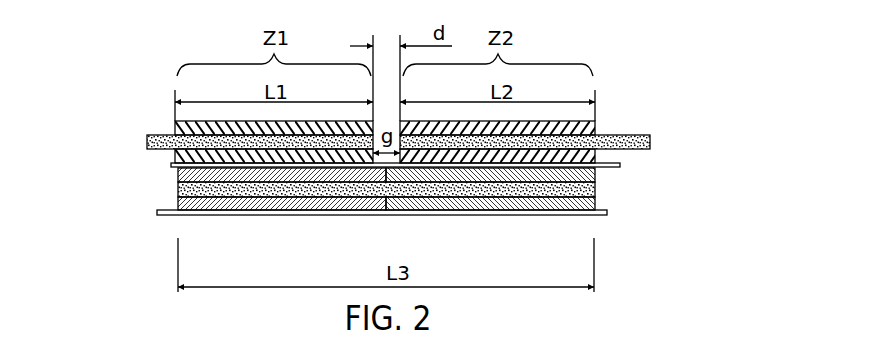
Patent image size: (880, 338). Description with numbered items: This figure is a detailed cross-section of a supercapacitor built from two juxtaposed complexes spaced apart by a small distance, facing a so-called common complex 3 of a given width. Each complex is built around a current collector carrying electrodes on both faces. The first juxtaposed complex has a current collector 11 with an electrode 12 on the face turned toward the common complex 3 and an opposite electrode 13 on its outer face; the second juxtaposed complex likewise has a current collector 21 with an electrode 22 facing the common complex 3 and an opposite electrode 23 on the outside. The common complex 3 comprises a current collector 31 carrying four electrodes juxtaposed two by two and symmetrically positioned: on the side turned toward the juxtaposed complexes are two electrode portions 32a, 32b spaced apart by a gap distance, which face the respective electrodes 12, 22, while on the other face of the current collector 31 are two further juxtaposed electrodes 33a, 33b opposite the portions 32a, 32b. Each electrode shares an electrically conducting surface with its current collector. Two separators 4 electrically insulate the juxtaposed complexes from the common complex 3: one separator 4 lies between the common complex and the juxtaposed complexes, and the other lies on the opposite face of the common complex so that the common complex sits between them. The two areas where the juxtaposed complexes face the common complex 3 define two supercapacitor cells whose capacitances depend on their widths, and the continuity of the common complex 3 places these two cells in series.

The electrode 13 is at (176, 123).
The current collector 11 is at (148, 136).
The electrode 12 is at (175, 157).
The current collector 21 is at (650, 142).
The electrode 23 is at (598, 121).
The electrode 22 is at (597, 156).
The separator 4 is at (172, 167).
The electrode portion 32a is at (178, 175).
The current collector 31 is at (597, 178).
The electrode portion 32b is at (597, 174).
The electrode 33a is at (227, 206).
The electrode 33b is at (545, 210).
The common complex 3 is at (400, 172).